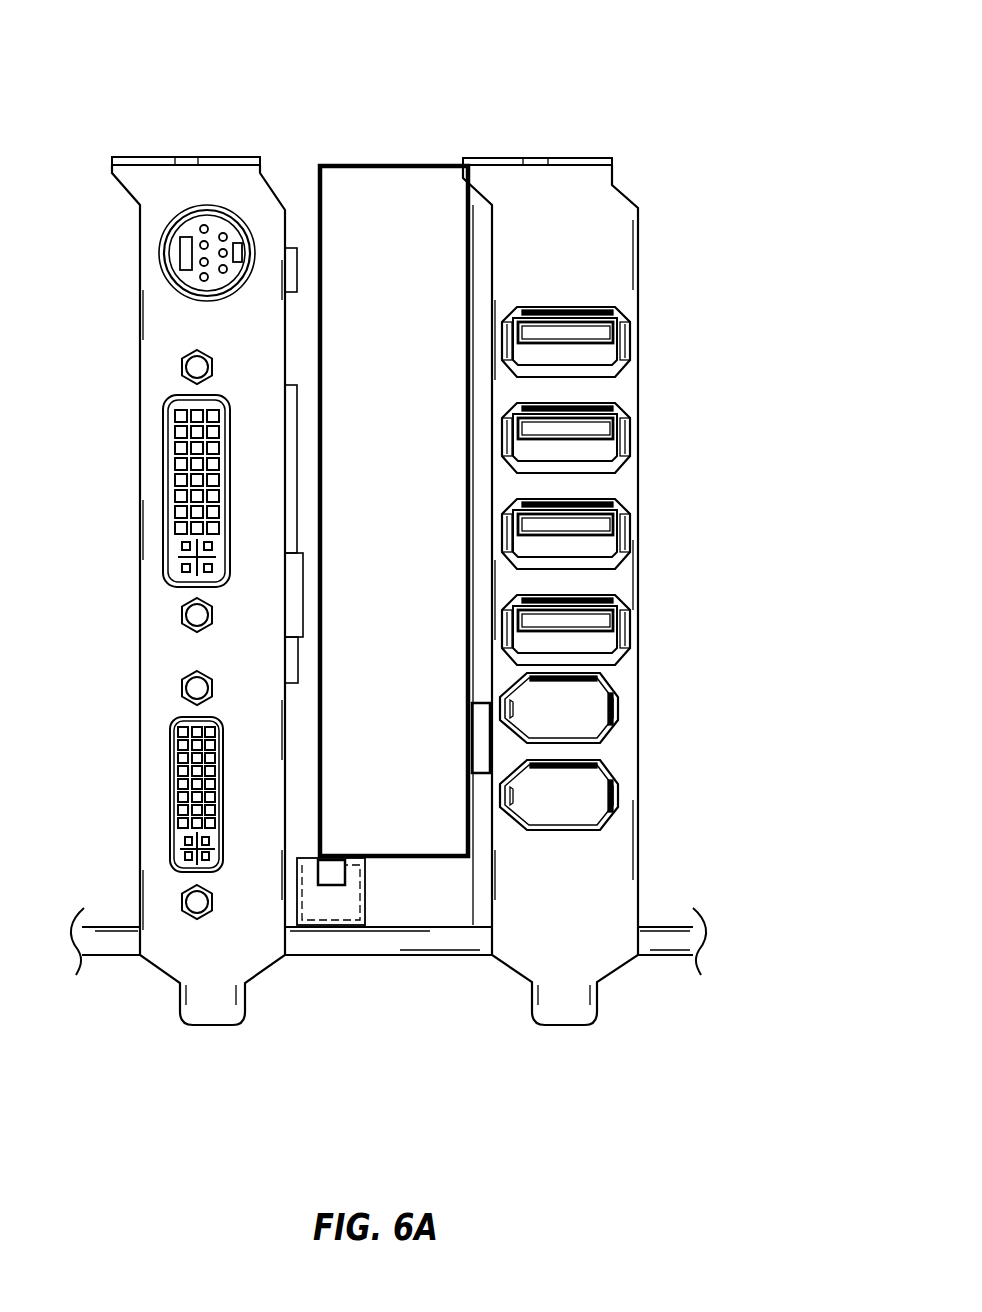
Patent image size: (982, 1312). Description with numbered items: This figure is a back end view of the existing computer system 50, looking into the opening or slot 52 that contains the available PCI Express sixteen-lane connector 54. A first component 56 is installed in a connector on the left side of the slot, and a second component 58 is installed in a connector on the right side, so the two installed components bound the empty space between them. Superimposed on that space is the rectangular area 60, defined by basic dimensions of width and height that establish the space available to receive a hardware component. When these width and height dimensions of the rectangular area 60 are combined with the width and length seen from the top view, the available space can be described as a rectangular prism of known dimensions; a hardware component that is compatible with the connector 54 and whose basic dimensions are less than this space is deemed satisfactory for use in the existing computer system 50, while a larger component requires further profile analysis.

The existing computer system 50 is at (742, 61).
The opening or slot 52 is at (420, 966).
The PCI Express 16X connector 54 is at (345, 908).
The first component 56 is at (140, 345).
The second component 58 is at (638, 493).
The rectangular area 60 is at (372, 164).